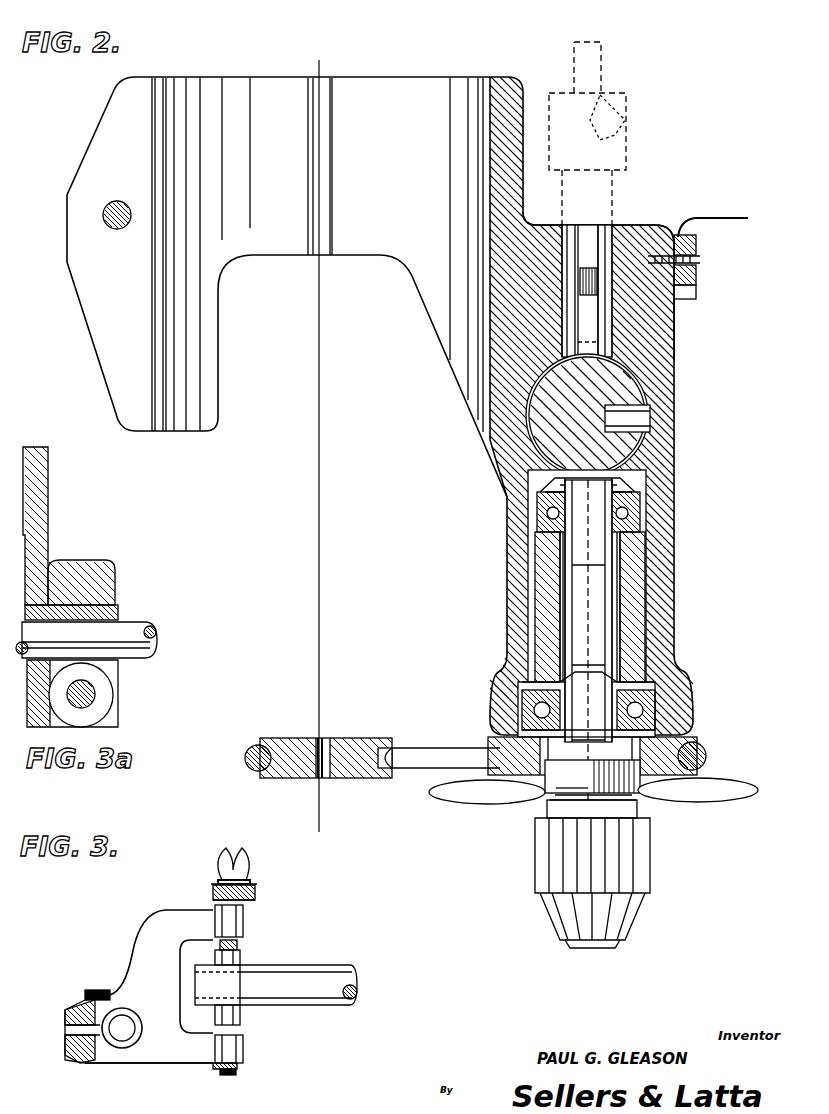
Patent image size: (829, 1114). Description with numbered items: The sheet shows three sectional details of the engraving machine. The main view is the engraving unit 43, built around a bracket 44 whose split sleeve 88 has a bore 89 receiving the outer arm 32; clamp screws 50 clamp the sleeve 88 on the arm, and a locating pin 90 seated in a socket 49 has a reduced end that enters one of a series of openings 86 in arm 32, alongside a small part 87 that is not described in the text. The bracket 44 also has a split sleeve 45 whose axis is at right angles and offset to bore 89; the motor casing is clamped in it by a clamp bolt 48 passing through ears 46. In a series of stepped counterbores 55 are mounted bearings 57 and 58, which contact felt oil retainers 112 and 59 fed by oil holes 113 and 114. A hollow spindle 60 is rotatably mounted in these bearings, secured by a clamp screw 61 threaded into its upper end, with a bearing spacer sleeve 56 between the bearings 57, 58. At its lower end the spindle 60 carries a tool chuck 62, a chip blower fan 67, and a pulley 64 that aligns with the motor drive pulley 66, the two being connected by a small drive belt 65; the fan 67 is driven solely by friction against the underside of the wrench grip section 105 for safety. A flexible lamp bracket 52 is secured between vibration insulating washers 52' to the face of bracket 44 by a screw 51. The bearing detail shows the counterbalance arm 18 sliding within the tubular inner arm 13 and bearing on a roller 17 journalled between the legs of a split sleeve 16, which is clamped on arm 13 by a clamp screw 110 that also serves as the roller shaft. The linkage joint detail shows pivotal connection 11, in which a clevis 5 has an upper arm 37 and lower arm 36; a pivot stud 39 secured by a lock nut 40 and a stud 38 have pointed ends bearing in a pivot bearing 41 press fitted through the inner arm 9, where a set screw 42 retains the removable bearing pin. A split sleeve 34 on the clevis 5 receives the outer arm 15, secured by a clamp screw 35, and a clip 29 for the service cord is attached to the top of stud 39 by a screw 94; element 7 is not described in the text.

In FIG. 2, the engraving unit 43 is at (645, 212).
In FIG. 2, the bracket 44 is at (505, 492).
In FIG. 2, the split sleeve 45 is at (412, 77).
In FIG. 2, the ears 46 is at (133, 418).
In FIG. 2, the clamp bolt 48 is at (118, 229).
In FIG. 2, the socket 49 is at (590, 237).
In FIG. 2, the clamp screws 50 is at (700, 297).
In FIG. 2, the screw 51 is at (700, 257).
In FIG. 2, the bracket 52 is at (729, 205).
In FIG. 2, the vibration insulating washers 52' is at (715, 270).
In FIG. 2, the split sleeve 88 is at (676, 332).
In FIG. 2, the bore 89 is at (618, 392).
In FIG. 2, the locating pin 90 is at (627, 101).
In FIG. 2, the outer arm 32 is at (648, 418).
In FIG. 2, the openings 86 is at (545, 398).
In FIG. 2, the key 87 is at (648, 446).
In FIG. 2, the oil hole 113 is at (642, 485).
In FIG. 2, the felt oil retainer 112 is at (638, 493).
In FIG. 2, the stepped counterbores 55 is at (548, 481).
In FIG. 2, the clamp screw 61 is at (548, 489).
In FIG. 2, the bearing 57 is at (642, 508).
In FIG. 2, the bearing spacer sleeve 56 is at (628, 592).
In FIG. 2, the hollow spindle 60 is at (602, 613).
In FIG. 2, the oil hole 114 is at (650, 670).
In FIG. 2, the felt oil retainer 59 is at (650, 688).
In FIG. 2, the bearing 58 is at (658, 703).
In FIG. 2, the pulley 64 is at (700, 745).
In FIG. 2, the drive belt 65 is at (248, 766).
In FIG. 2, the drive pulley 66 is at (368, 738).
In FIG. 2, the wrench grip section 105 is at (592, 780).
In FIG. 2, the chip blower fan 67 is at (756, 797).
In FIG. 2, the tool chuck 62 is at (652, 870).
In FIG. 3A, the clevis 5 is at (50, 535).
In FIG. 3, the clevis 5 is at (158, 1064).
In FIG. 3A, the split sleeve 16 is at (116, 586).
In FIG. 3A, the inner arm 13 is at (120, 612).
In FIG. 3A, the arm 18 is at (160, 640).
In FIG. 3A, the clamp screw 110 is at (97, 697).
In FIG. 3A, the roller 17 is at (100, 712).
In FIG. 3, the pivotal connection 11 is at (194, 900).
In FIG. 3, the outer arm 15 is at (132, 1020).
In FIG. 3, the split sleeve 34 is at (66, 1046).
In FIG. 3, the clamp screw 35 is at (90, 992).
In FIG. 3, the set screw 42 is at (190, 985).
In FIG. 3, the inner arm 9 is at (322, 965).
In FIG. 3, the clip 29 is at (234, 853).
In FIG. 3, the screw 94 is at (219, 868).
In FIG. 3, the cap 7 is at (250, 883).
In FIG. 3, the lock nut 40 is at (254, 893).
In FIG. 3, the upper arm 37 is at (244, 916).
In FIG. 3, the pivot stud 39 is at (238, 942).
In FIG. 3, the pivot bearing 41 is at (240, 958).
In FIG. 3, the lower arm 36 is at (246, 1050).
In FIG. 3, the stud 38 is at (236, 1074).